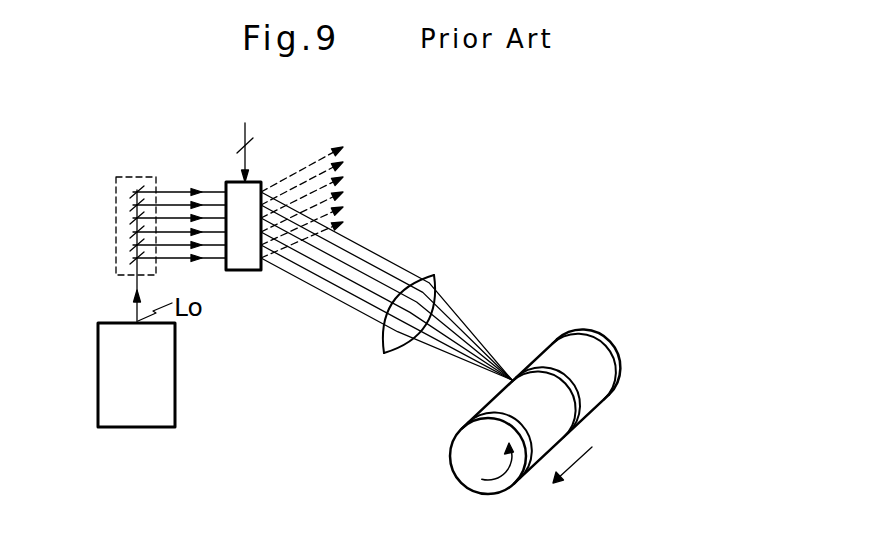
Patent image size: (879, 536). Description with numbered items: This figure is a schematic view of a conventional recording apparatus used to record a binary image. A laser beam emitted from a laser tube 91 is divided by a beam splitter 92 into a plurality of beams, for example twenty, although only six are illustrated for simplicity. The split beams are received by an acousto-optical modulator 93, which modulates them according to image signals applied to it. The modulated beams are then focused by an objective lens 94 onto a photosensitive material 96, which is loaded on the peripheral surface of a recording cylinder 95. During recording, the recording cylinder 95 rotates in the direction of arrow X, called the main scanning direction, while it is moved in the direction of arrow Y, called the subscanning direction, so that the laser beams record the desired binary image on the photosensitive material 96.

The laser tube 91 is at (171, 375).
The beam splitter 92 is at (134, 226).
The acousto-optical modulator 93 is at (284, 208).
The objective lens 94 is at (450, 308).
The recording cylinder 95 is at (576, 415).
The photosensitive material 96 is at (598, 425).